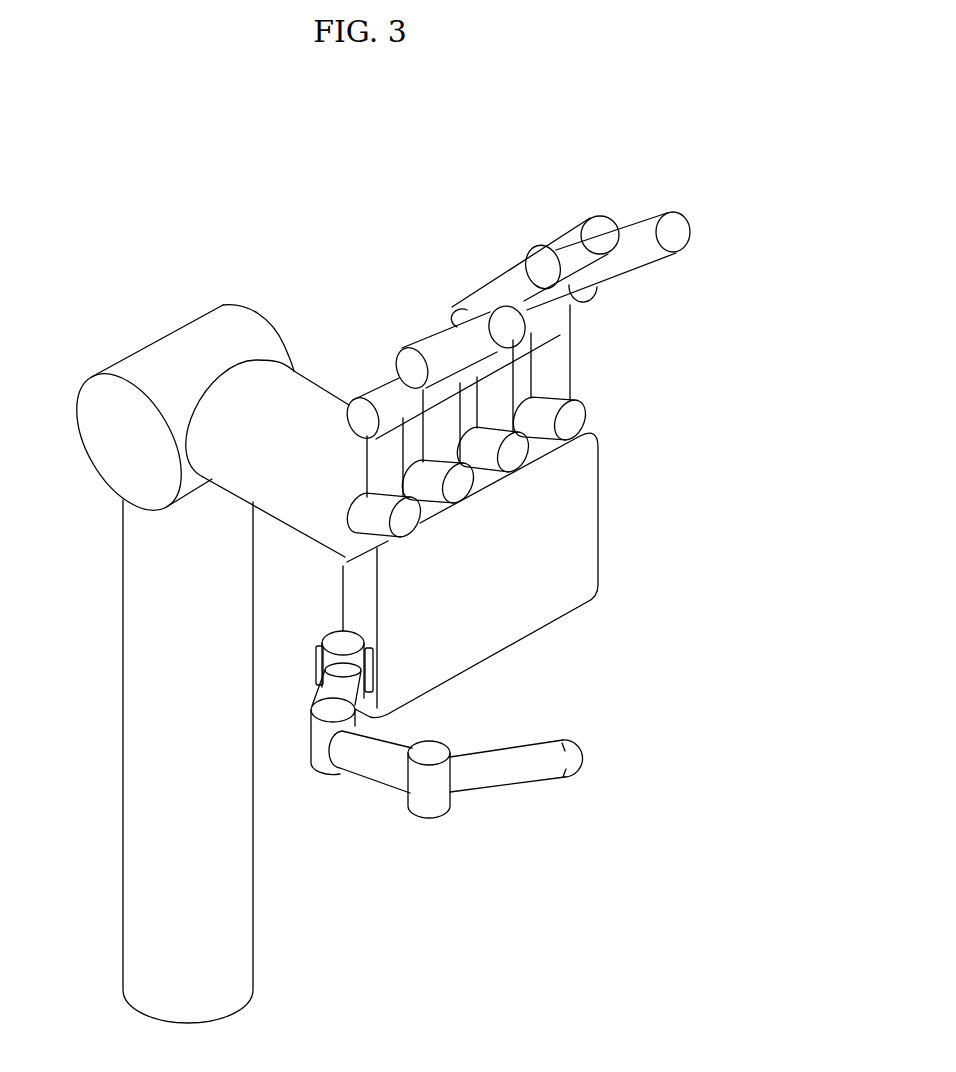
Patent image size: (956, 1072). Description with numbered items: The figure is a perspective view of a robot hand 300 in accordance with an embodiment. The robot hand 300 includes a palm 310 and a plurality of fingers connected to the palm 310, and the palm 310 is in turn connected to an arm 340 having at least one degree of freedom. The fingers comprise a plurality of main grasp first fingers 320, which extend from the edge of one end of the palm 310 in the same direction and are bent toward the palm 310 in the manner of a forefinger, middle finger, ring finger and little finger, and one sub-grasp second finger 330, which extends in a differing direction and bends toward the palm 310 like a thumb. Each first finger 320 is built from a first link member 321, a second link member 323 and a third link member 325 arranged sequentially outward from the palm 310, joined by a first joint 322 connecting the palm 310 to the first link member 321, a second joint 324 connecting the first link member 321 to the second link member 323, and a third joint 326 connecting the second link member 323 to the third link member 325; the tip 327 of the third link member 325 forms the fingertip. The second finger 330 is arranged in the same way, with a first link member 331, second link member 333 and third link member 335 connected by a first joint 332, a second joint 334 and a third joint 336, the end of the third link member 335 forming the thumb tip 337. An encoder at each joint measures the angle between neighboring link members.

The robot hand 300 is at (323, 120).
The palm 310 is at (600, 527).
The first fingers 320 is at (564, 200).
The first link member 321 is at (375, 460).
The first joint 322 is at (378, 533).
The second link member 323 is at (393, 383).
The second joint 324 is at (365, 413).
The third link member 325 is at (447, 308).
The third joint 326 is at (412, 362).
The tip 327 is at (518, 322).
The second finger 330 is at (415, 852).
The first link member 331 is at (322, 685).
The first joint 332 is at (333, 638).
The second link member 333 is at (373, 773).
The second joint 334 is at (316, 762).
The third link member 335 is at (500, 753).
The third joint 336 is at (441, 805).
The thumb tip 337 is at (580, 758).
The arm 340 is at (123, 620).